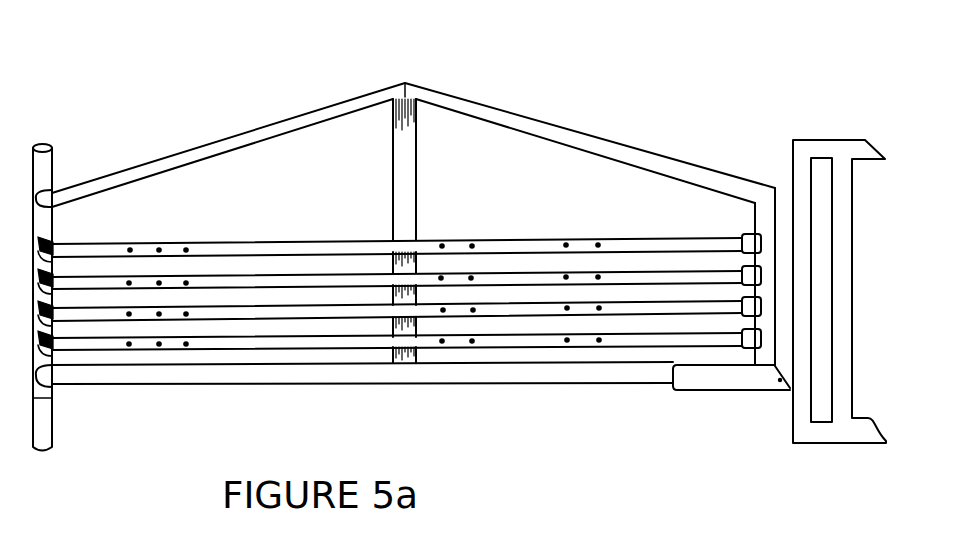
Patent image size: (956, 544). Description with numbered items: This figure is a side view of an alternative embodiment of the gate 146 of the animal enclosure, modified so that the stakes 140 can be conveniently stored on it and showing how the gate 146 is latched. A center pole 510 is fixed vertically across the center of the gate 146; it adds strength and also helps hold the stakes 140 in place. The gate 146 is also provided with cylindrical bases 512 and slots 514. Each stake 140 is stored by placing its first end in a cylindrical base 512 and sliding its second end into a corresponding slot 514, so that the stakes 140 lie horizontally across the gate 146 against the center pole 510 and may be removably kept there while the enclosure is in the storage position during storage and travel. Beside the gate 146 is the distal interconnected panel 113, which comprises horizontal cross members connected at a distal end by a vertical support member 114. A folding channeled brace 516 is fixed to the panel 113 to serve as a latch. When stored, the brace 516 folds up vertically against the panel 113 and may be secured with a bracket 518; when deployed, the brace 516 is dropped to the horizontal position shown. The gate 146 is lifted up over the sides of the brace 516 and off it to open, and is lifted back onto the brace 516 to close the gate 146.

The gate 146 is at (352, 95).
The center pole 510 is at (413, 160).
The slot 514 is at (40, 243).
The stake 140 is at (531, 243).
The cylindrical base 512 is at (745, 235).
The bracket 518 is at (786, 205).
The folding channeled brace 516 is at (700, 384).
The distal interconnected panel 113 is at (829, 140).
The vertical support member 114 is at (849, 248).